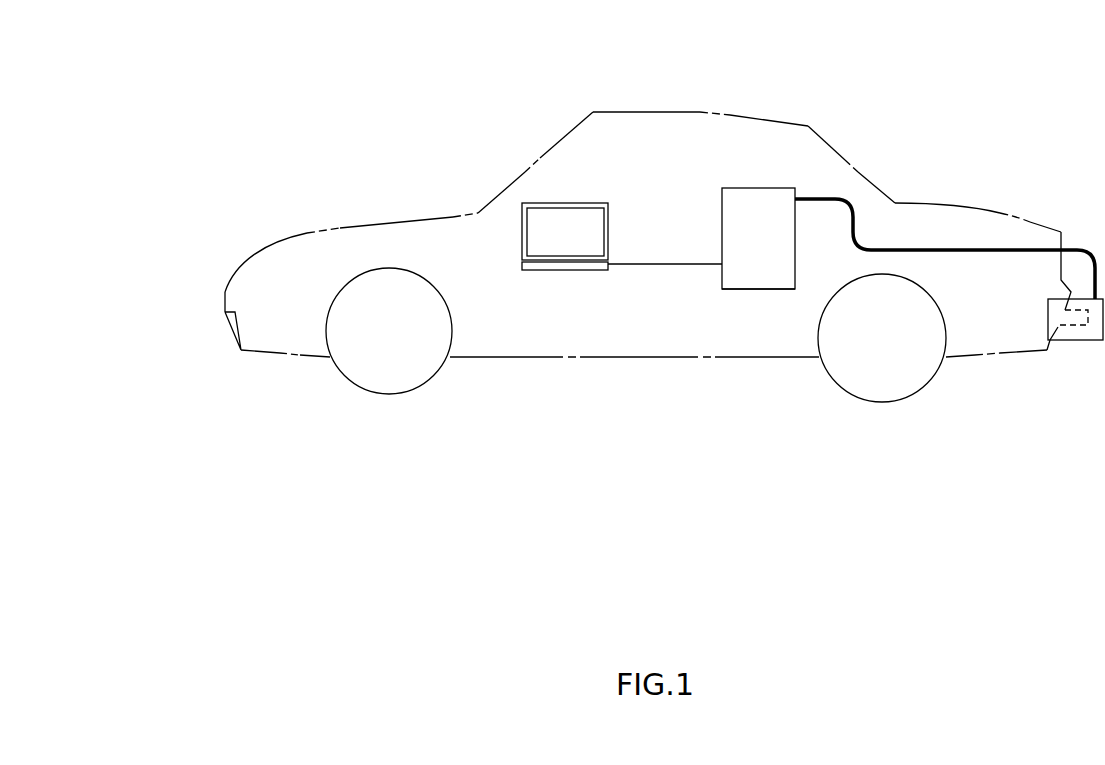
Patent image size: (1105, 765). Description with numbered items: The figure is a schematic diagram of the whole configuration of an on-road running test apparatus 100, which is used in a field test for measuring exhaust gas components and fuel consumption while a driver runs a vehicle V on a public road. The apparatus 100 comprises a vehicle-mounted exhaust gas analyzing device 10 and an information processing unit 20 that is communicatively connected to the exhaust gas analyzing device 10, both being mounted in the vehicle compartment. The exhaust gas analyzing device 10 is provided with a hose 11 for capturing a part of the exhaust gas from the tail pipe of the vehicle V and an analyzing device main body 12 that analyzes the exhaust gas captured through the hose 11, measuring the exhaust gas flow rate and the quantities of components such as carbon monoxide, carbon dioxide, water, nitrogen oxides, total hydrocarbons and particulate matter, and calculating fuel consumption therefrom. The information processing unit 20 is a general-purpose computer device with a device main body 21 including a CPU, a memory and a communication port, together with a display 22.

The on-road running test apparatus 100 is at (890, 100).
The vehicle V is at (407, 218).
The vehicle-mounted exhaust gas analyzing device 10 is at (715, 182).
The hose 11 is at (970, 248).
The analyzing device main body 12 is at (742, 290).
The information processing unit 20 is at (513, 255).
The device main body 21 is at (570, 270).
The display 22 is at (522, 210).